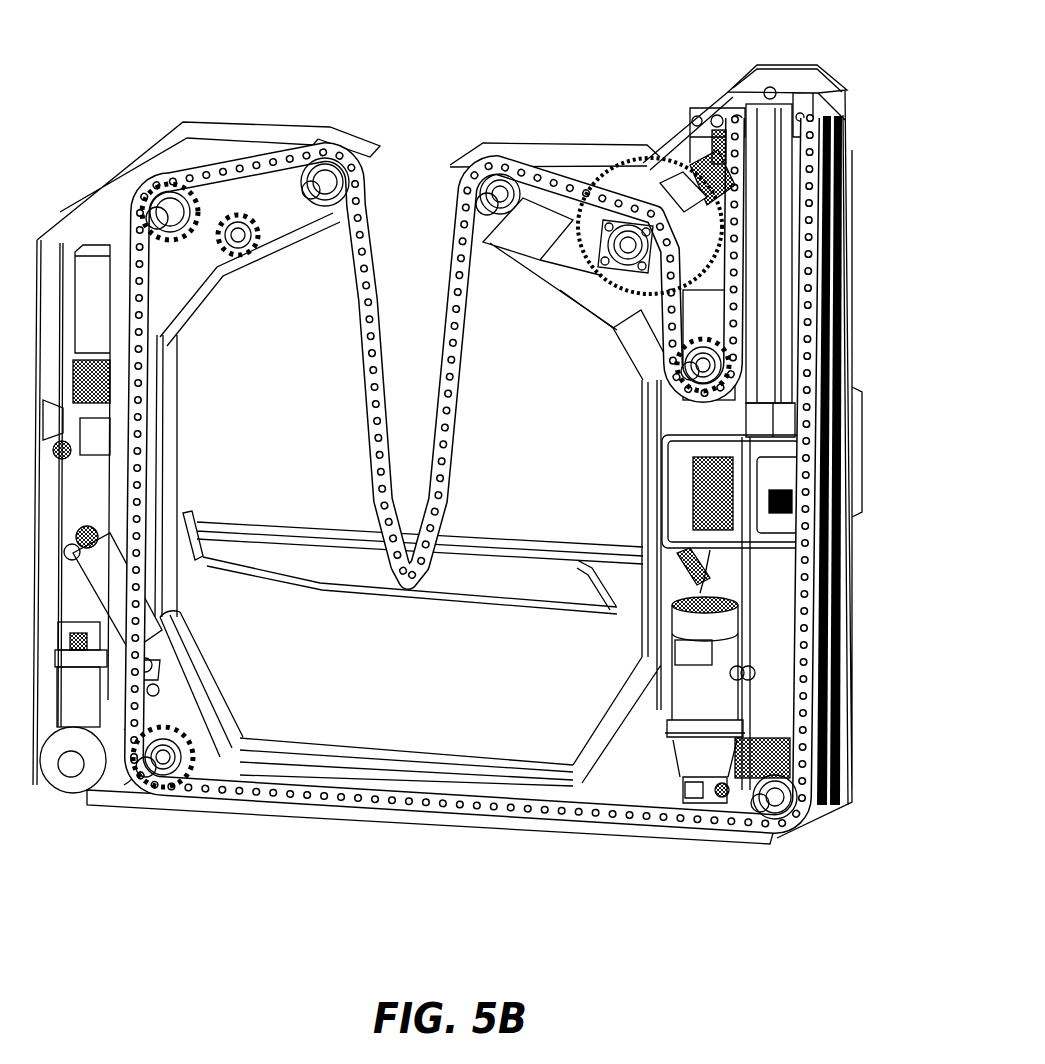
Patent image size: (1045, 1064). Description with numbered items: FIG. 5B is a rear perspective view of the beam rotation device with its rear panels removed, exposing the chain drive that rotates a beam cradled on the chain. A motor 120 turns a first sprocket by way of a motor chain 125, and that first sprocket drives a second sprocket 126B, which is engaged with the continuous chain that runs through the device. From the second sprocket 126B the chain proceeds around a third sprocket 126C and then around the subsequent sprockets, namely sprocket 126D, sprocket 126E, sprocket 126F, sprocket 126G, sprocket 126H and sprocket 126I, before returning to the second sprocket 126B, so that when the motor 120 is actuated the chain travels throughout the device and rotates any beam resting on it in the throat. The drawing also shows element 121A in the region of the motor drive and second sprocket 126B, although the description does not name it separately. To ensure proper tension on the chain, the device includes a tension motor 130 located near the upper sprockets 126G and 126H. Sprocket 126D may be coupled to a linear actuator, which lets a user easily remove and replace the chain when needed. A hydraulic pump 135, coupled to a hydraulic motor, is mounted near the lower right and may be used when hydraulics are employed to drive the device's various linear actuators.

The motor 120 is at (688, 170).
The drive gear disc 121A is at (635, 182).
The motor chain 125 is at (723, 212).
The second sprocket 126B is at (678, 262).
The third sprocket 126C is at (722, 356).
The sprocket 126D is at (837, 92).
The sprocket 126E is at (800, 823).
The sprocket 126F is at (170, 783).
The sprocket 126G is at (173, 188).
The sprocket 126H is at (328, 168).
The sprocket 126I is at (508, 187).
The tension motor 130 is at (238, 242).
The hydraulic pump 135 is at (680, 825).